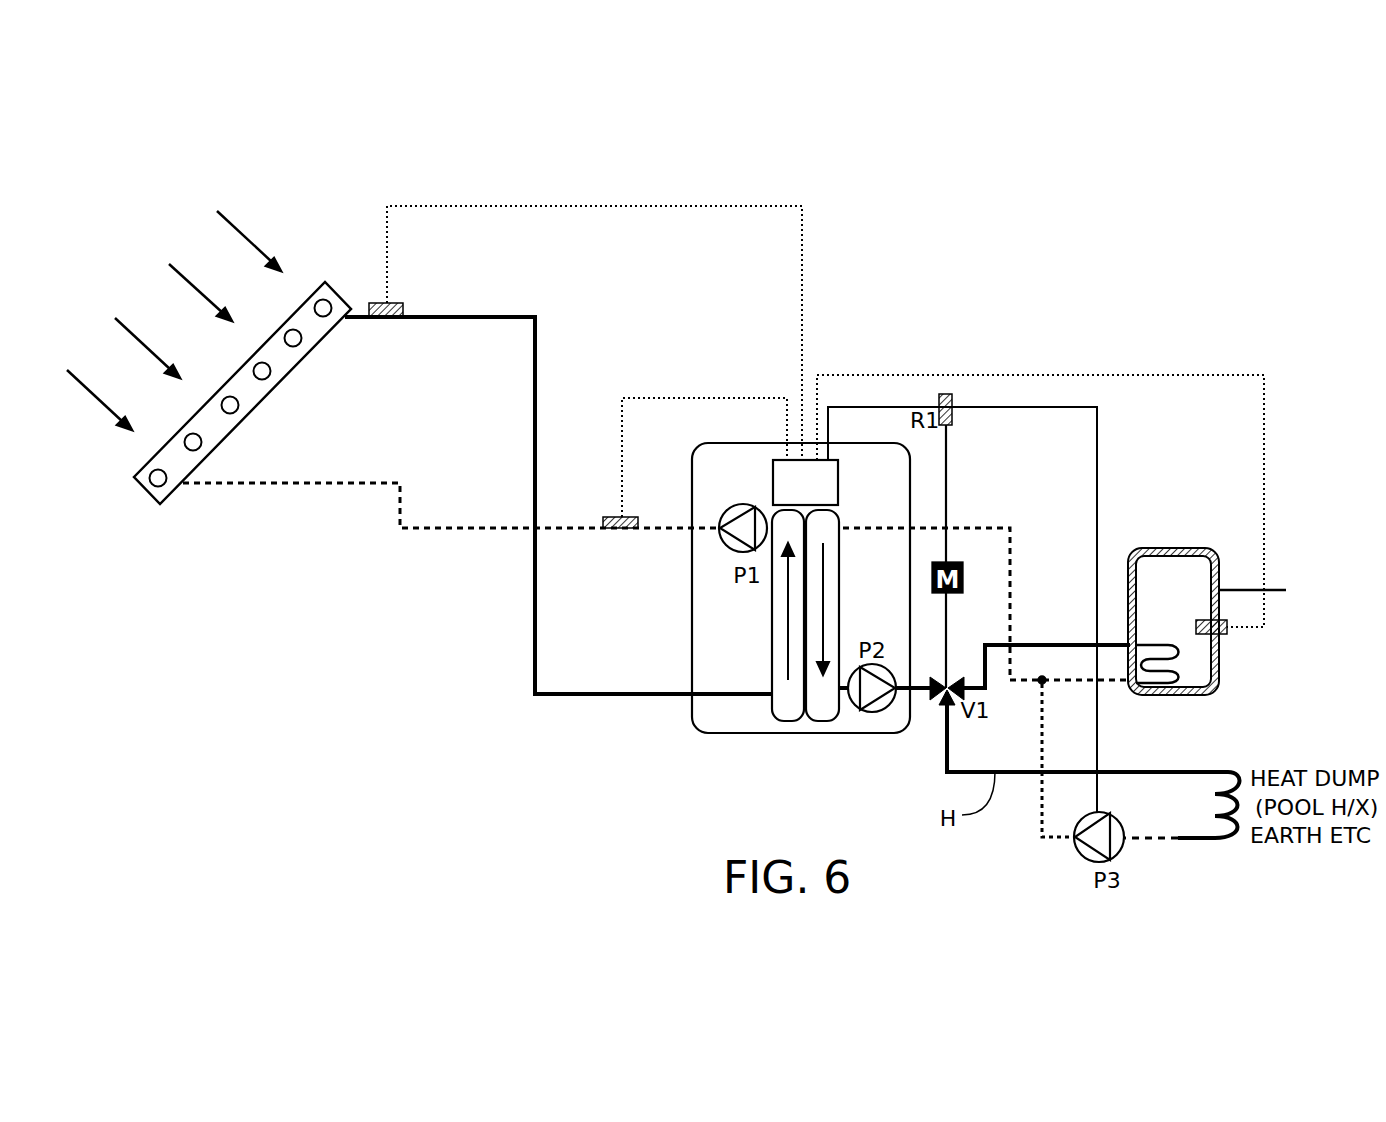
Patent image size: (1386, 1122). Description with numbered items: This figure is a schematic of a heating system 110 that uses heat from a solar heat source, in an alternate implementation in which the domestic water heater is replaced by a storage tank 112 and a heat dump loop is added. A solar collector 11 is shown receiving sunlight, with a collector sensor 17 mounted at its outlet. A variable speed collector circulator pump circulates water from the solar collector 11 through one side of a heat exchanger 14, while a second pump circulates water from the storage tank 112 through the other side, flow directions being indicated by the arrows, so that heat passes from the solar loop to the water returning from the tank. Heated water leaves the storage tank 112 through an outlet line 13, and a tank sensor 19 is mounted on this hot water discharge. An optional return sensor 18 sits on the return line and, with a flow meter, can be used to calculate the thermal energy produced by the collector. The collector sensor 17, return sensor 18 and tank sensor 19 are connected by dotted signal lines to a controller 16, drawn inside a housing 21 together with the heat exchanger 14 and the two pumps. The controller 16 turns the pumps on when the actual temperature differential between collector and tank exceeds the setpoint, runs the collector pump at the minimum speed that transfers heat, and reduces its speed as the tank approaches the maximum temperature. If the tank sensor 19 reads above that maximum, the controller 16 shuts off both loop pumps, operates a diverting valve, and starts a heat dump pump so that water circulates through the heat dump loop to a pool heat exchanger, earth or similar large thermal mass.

The solar collector 11 is at (332, 192).
The collector sensor 17 is at (403, 300).
The return sensor 18 is at (607, 517).
The controller 16 is at (773, 475).
The control unit housing 21 is at (710, 735).
The heat exchanger 14 is at (785, 713).
The system 110 is at (1072, 240).
The storage tank 112 is at (1198, 570).
The outlet line 13 is at (1268, 588).
The tank sensor 19 is at (1231, 616).